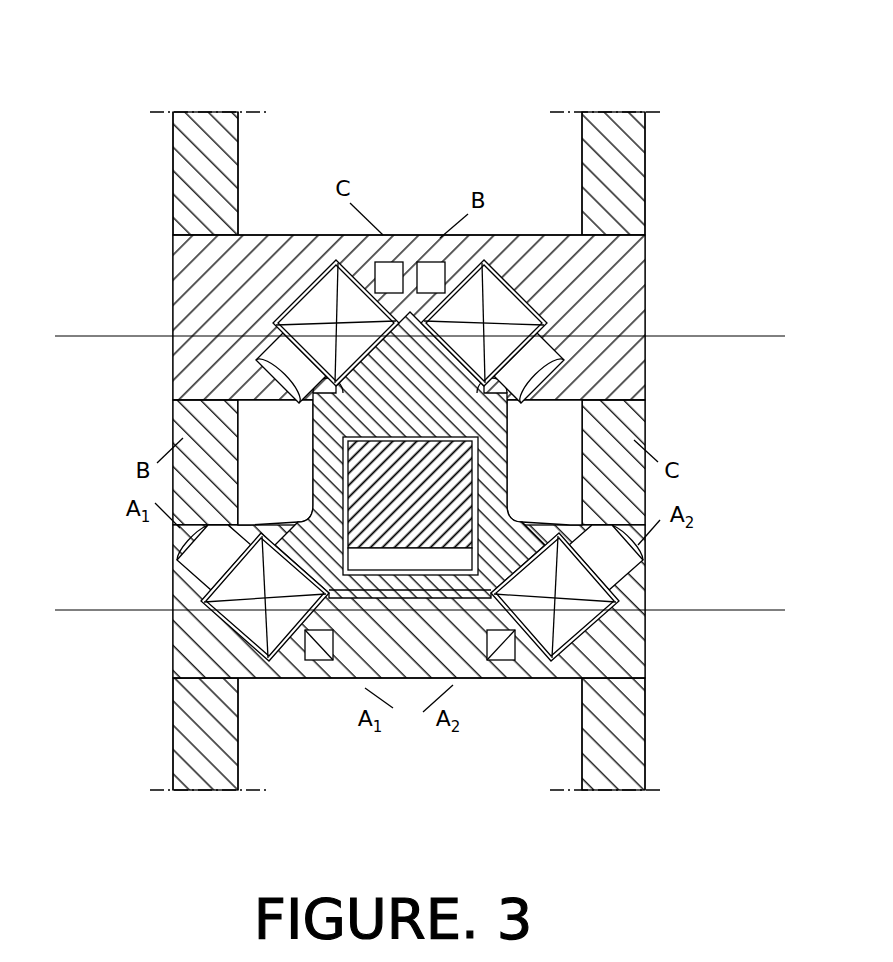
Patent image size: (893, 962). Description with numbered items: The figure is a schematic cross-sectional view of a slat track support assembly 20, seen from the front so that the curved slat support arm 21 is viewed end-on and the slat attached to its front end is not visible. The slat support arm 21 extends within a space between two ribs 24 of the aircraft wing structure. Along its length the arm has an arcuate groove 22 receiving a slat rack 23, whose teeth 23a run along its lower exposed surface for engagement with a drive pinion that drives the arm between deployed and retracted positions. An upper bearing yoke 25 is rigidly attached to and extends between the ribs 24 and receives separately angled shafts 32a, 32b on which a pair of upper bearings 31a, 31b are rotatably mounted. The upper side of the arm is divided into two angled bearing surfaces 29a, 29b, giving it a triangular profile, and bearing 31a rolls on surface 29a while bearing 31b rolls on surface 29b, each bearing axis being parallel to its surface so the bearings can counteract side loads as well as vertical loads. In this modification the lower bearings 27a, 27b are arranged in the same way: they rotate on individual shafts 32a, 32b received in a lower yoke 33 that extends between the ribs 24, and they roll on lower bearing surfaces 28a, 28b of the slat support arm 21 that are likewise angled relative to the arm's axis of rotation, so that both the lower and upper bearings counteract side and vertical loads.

The slat track support assembly 20 is at (472, 70).
The slat support arm 21 is at (398, 392).
The arcuate groove 22 is at (386, 600).
The slat rack 23 is at (398, 501).
The teeth 23a is at (434, 566).
The ribs 24 is at (208, 790).
The upper bearing yoke 25 is at (180, 323).
The lower bearing 27a is at (296, 680).
The lower bearing 27b is at (536, 680).
The lower bearing surface 28a is at (232, 601).
The lower bearing surface 28b is at (594, 598).
The upper bearing surface 29a is at (346, 404).
The upper bearing surface 29b is at (486, 404).
The upper bearing 31a is at (335, 296).
The upper bearing 31b is at (500, 296).
The shaft 32a is at (272, 362).
The shaft 32b is at (546, 367).
The lower yoke 33 is at (411, 668).